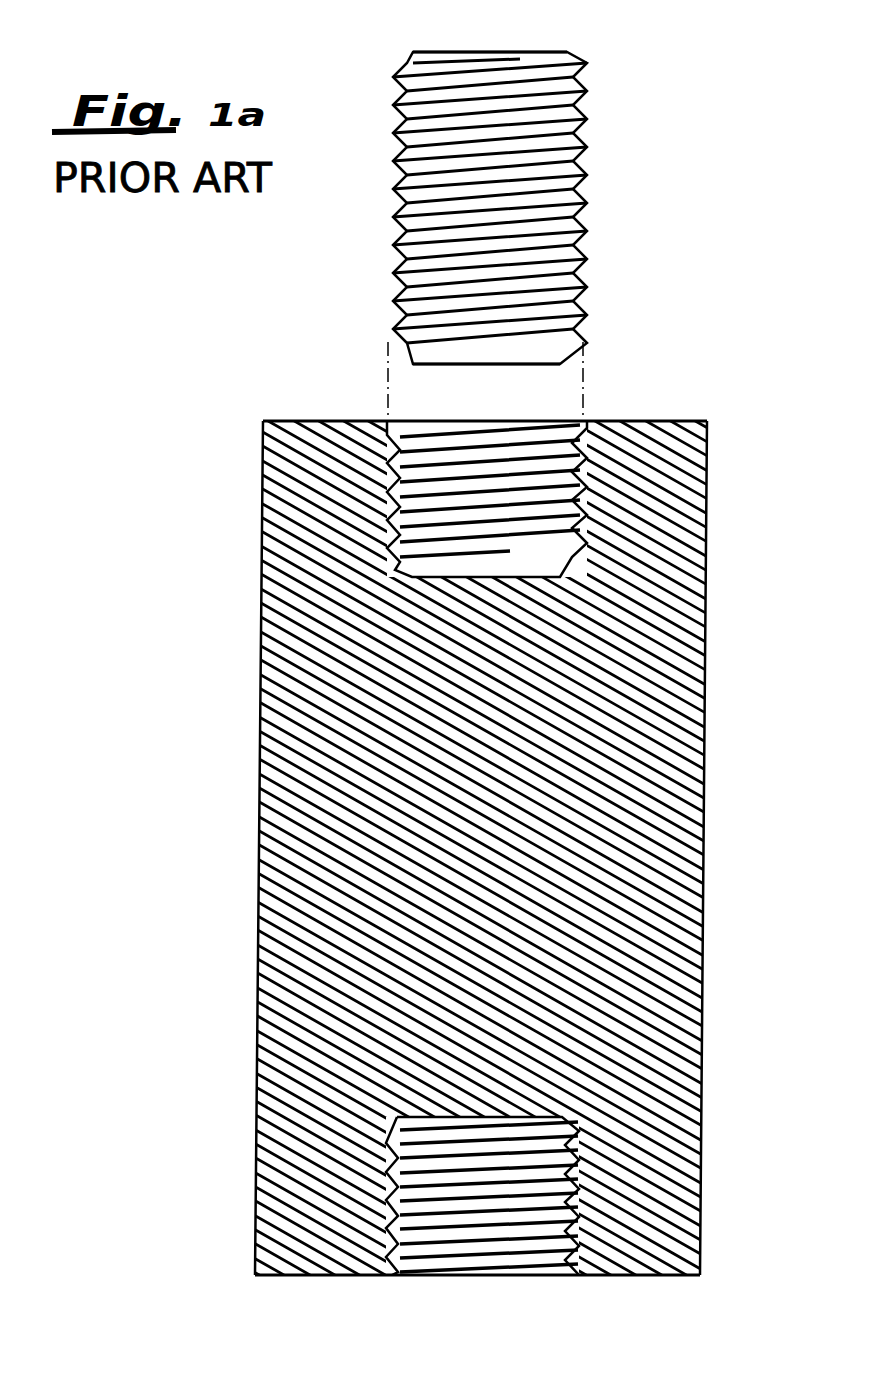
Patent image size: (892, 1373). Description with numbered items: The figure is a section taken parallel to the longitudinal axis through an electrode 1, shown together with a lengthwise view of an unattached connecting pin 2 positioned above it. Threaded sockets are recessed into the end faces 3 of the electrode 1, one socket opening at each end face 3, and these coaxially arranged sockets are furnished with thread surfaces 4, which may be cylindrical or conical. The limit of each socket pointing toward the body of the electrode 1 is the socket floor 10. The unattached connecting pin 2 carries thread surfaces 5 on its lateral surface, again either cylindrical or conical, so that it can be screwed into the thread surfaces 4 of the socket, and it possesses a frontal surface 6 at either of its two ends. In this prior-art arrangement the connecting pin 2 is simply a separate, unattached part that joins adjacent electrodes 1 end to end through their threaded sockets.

The electrode 1 is at (706, 606).
The unattached connecting pin 2 is at (587, 224).
The end face 3 is at (659, 422).
The thread surface 4 is at (399, 472).
The thread surface 5 is at (397, 263).
The frontal surface 6 is at (469, 49).
The socket floor 10 is at (490, 568).